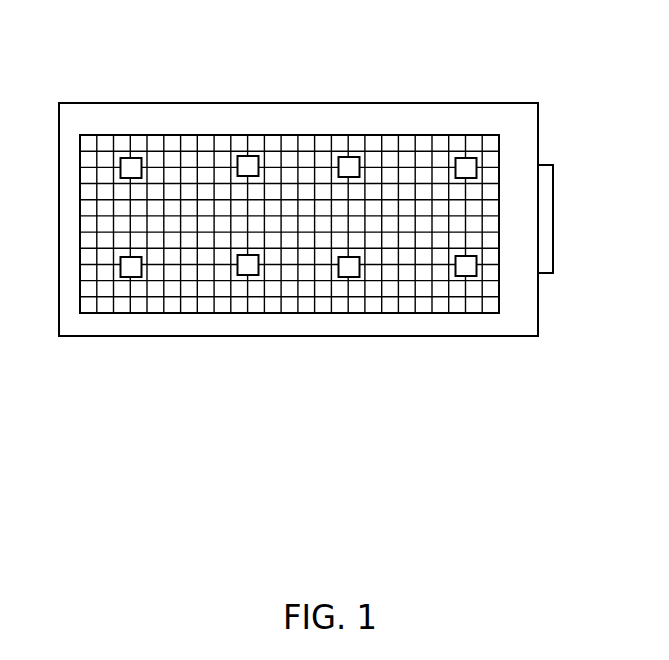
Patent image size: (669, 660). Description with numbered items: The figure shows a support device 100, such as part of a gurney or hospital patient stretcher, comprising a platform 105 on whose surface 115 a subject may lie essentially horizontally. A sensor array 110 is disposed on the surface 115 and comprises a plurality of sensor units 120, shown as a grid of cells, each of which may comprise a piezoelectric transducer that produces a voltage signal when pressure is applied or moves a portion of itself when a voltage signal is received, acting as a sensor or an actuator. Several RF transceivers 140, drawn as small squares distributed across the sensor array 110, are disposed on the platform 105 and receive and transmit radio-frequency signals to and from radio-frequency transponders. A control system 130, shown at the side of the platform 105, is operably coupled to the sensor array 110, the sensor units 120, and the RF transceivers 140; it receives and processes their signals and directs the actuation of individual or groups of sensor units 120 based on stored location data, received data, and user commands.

The support device 100 is at (335, 253).
The platform 105 is at (503, 103).
The sensor array 110 is at (258, 206).
The surface 115 is at (518, 150).
The sensor units 120 is at (310, 210).
The control system 130 is at (547, 222).
The RF transceivers 140 is at (132, 165).